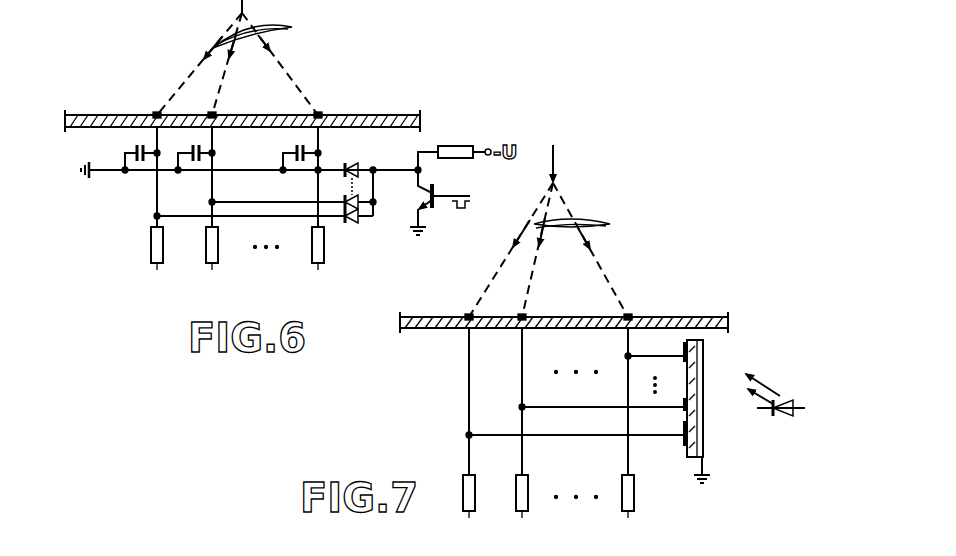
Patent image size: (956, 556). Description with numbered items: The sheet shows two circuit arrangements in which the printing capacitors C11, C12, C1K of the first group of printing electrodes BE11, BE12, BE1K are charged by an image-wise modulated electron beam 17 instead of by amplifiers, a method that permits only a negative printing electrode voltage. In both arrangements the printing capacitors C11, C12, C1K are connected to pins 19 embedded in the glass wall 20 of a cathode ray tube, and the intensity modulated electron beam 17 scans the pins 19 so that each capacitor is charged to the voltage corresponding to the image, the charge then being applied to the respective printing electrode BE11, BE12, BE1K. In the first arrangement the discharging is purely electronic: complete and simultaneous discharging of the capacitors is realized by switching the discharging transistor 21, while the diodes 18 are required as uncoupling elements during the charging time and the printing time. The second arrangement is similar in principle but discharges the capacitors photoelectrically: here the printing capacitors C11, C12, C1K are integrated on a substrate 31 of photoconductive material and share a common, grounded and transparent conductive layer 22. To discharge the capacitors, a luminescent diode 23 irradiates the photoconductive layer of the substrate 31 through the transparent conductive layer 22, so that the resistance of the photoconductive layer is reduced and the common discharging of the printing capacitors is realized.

In FIG. 6, the image-wise modulated electron beam 17 is at (237, 57).
In FIG. 7, the image-wise modulated electron beam 17 is at (548, 231).
In FIG. 6, the pins 19 is at (211, 112).
In FIG. 7, the pins 19 is at (522, 314).
In FIG. 6, the glass wall 20 is at (394, 114).
In FIG. 7, the glass wall 20 is at (706, 318).
In FIG. 6, the diodes 18 is at (350, 163).
In FIG. 6, the discharging transistor 21 is at (430, 206).
In FIG. 7, the transparent conductive layer 22 is at (703, 353).
In FIG. 7, the luminescent diode 23 is at (777, 420).
In FIG. 7, the substrate 31 is at (696, 446).
In FIG. 6, the printing capacitor C11 is at (132, 147).
In FIG. 7, the printing capacitor C11 is at (683, 442).
In FIG. 6, the printing capacitor C12 is at (202, 155).
In FIG. 7, the printing capacitor C12 is at (672, 418).
In FIG. 6, the printing capacitor C1K is at (290, 156).
In FIG. 7, the printing capacitor C1K is at (683, 360).
In FIG. 6, the printing electrode BE11 is at (160, 261).
In FIG. 7, the printing electrode BE11 is at (461, 510).
In FIG. 6, the printing electrode BE12 is at (215, 261).
In FIG. 7, the printing electrode BE12 is at (536, 510).
In FIG. 6, the printing electrode BE1K is at (322, 261).
In FIG. 7, the printing electrode BE1K is at (644, 510).